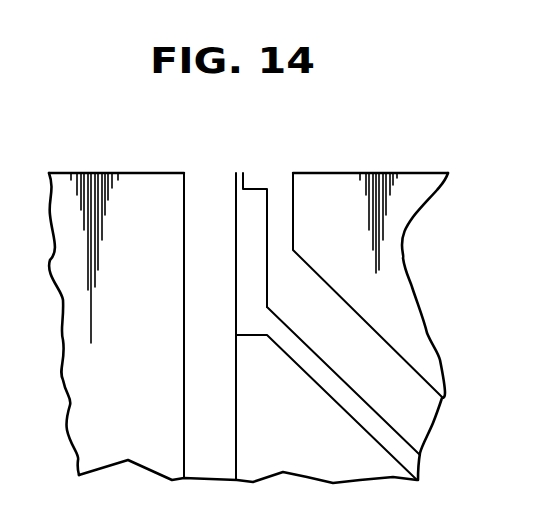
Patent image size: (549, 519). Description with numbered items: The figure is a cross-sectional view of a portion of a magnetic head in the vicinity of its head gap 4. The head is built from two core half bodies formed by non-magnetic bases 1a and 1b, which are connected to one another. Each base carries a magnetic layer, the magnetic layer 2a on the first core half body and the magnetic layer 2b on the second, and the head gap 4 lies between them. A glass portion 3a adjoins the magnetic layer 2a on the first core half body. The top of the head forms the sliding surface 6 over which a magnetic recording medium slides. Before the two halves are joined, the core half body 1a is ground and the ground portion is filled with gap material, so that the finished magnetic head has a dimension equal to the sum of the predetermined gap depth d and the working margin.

The non-magnetic base 1a is at (407, 190).
The non-magnetic base 1b is at (128, 183).
The magnetic layer 2a is at (358, 333).
The magnetic layer 2b is at (207, 360).
The glass portion 3a is at (328, 383).
The head gap 4 is at (240, 173).
The sliding surface 6 is at (372, 173).
The gap depth d is at (323, 147).